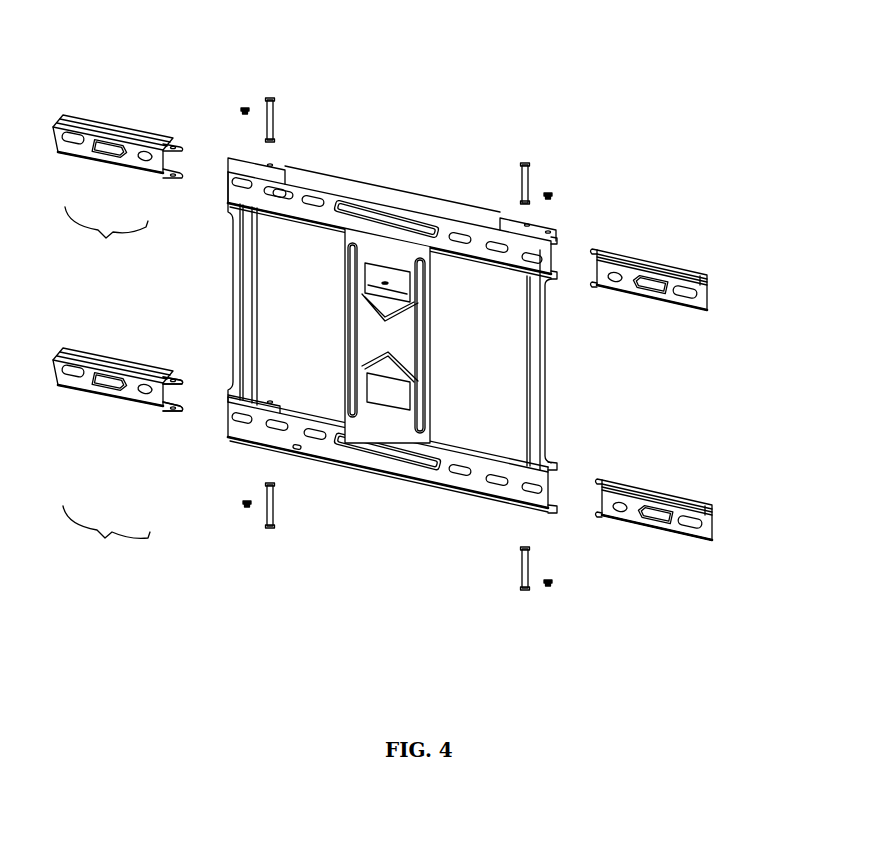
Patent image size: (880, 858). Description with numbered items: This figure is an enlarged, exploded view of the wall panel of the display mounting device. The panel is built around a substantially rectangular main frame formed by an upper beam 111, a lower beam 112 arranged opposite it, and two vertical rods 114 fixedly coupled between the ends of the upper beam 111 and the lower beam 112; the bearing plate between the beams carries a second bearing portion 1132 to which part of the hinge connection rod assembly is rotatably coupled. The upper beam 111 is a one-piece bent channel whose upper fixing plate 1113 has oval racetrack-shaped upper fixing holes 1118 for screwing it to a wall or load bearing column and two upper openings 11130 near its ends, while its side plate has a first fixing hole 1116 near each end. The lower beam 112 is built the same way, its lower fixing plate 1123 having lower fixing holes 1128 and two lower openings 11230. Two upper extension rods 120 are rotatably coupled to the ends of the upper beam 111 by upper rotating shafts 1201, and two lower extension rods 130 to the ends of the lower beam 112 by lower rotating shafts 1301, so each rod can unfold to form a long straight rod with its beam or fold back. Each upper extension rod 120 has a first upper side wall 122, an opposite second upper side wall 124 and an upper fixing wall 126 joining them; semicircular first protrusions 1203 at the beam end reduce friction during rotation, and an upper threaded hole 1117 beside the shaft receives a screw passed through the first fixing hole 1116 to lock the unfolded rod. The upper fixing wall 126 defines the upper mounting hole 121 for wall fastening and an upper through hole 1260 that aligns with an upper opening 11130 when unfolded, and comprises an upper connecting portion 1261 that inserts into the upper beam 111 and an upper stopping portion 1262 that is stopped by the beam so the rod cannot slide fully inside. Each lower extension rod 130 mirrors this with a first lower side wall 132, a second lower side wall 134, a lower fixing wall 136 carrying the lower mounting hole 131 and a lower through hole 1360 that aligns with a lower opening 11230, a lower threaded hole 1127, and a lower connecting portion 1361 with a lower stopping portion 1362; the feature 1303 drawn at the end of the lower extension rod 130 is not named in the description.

The upper beam 111 is at (392, 220).
The lower beam 112 is at (392, 497).
The vertical rod 114 is at (250, 328).
The first fixing hole 1116 is at (549, 240).
The upper fixing plate 1113 is at (283, 190).
The upper fixing hole 1118 is at (497, 243).
The upper opening 11130 is at (530, 262).
The lower opening 11230 is at (530, 486).
The lower fixing plate 1123 is at (297, 446).
The lower fixing hole 1128 is at (487, 484).
The second bearing portion 1132 is at (387, 407).
The first protrusion 1203 is at (181, 146).
The upper rotating shaft 1201 is at (519, 167).
The lower rotating shaft 1301 is at (520, 580).
The upper extension rod 120 is at (121, 142).
The upper mounting hole 121 is at (72, 134).
The first upper side wall 122 is at (132, 132).
The upper connecting portion 1261 is at (90, 152).
The upper stopping portion 1262 is at (143, 161).
The upper fixing wall 126 is at (104, 243).
The second upper side wall 124 is at (672, 264).
The upper threaded hole 1117 is at (629, 252).
The upper through hole 1260 is at (617, 284).
The lower extension rod 130 is at (130, 439).
The first lower side wall 132 is at (132, 364).
The fixing tab 1303 is at (182, 413).
The lower connecting portion 1361 is at (83, 384).
The lower stopping portion 1362 is at (135, 397).
The lower fixing wall 136 is at (103, 541).
The second lower side wall 134 is at (692, 541).
The lower mounting hole 131 is at (733, 480).
The lower through hole 1360 is at (621, 504).
The lower threaded hole 1127 is at (627, 522).